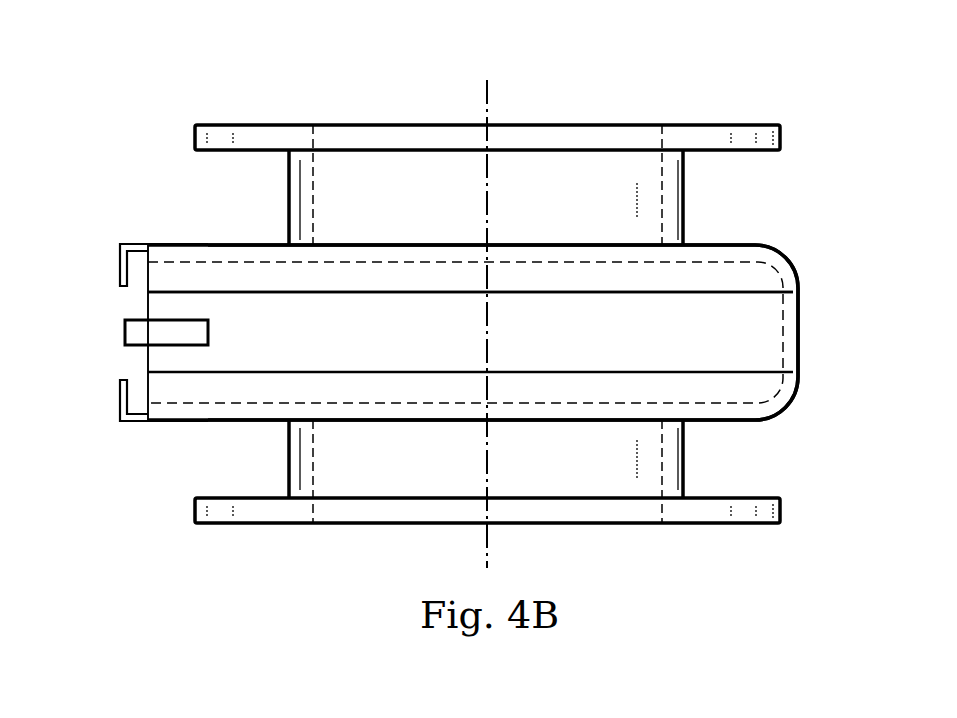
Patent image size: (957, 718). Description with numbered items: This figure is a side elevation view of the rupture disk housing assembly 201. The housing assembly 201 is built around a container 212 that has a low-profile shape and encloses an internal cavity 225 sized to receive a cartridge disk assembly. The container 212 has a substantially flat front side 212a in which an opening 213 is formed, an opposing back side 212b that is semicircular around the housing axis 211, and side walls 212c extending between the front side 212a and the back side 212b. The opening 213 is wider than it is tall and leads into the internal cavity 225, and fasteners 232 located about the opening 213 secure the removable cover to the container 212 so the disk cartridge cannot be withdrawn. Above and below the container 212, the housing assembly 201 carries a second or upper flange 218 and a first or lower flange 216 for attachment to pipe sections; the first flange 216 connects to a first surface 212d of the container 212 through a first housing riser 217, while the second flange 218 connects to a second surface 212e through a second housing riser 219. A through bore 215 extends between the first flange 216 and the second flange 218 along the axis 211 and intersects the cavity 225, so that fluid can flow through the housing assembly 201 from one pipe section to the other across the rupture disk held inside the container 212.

The housing assembly 201 is at (367, 76).
The housing axis 211 is at (490, 102).
The container 212 is at (584, 422).
The front side 212a is at (146, 290).
The back side 212b is at (798, 355).
The side walls 212c is at (557, 305).
The first surface 212d is at (248, 420).
The second surface 212e is at (252, 245).
The opening 213 is at (146, 275).
The through bore 215 is at (658, 157).
The first flange 216 is at (717, 526).
The first housing riser 217 is at (685, 455).
The second flange 218 is at (734, 124).
The second housing riser 219 is at (685, 200).
The internal cavity 225 is at (413, 275).
The fasteners 232 is at (118, 405).